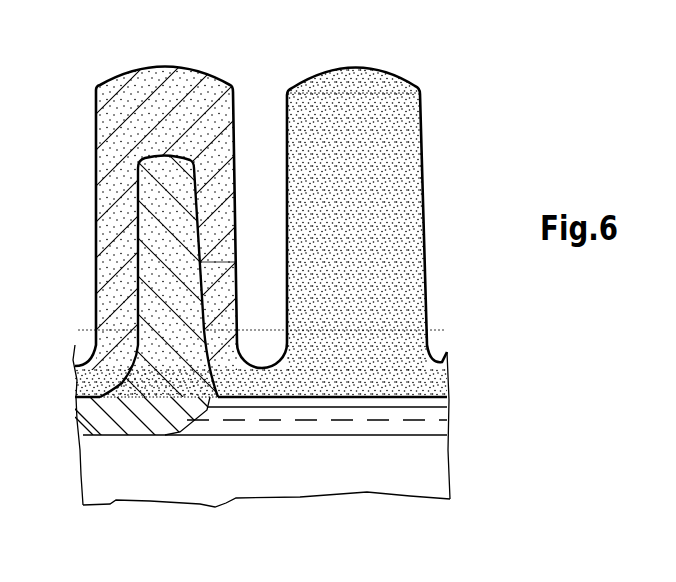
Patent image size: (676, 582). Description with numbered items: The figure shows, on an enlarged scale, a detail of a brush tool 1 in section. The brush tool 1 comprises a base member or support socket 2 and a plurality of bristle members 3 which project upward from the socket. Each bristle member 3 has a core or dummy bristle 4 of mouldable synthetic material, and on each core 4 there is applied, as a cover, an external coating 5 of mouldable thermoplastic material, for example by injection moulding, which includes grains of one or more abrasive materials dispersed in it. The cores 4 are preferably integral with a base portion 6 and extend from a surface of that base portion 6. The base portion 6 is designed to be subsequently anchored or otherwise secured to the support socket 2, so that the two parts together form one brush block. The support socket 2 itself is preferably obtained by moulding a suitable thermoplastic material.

The brush tool 1 is at (627, 0).
The support socket 2 is at (432, 482).
The bristle member 3 is at (142, 69).
The core 4 is at (152, 215).
The external coating 5 is at (116, 132).
The base portion 6 is at (440, 412).